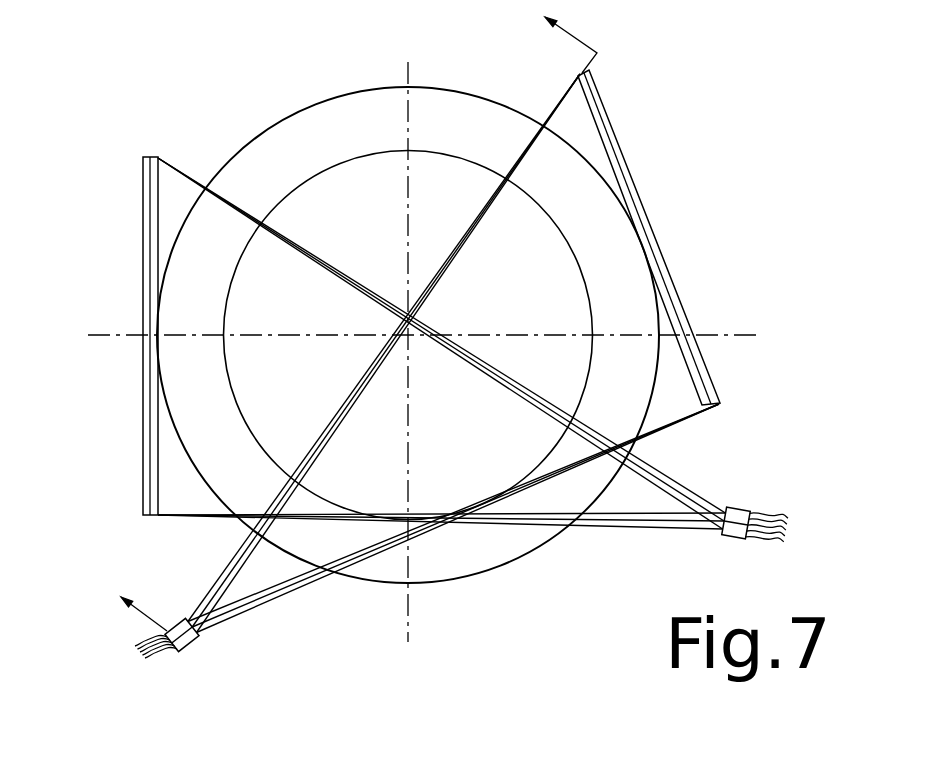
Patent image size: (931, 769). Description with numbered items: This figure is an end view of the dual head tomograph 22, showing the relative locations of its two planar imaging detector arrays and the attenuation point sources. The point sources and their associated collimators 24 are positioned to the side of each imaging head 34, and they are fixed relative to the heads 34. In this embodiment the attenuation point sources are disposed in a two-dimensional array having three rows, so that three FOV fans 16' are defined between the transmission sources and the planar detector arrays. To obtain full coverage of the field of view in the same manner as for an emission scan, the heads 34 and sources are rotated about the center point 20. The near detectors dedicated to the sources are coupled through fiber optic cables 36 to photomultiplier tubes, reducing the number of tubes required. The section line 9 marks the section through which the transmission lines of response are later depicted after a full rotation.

The section 9— 9 is at (342, 315).
The FOV fan 16' is at (441, 373).
The center point 20 is at (409, 336).
The dual head tomograph 22 is at (698, 200).
The collimator 24 is at (742, 508).
The head 34 is at (143, 257).
The fiber optic cable 36 is at (792, 520).